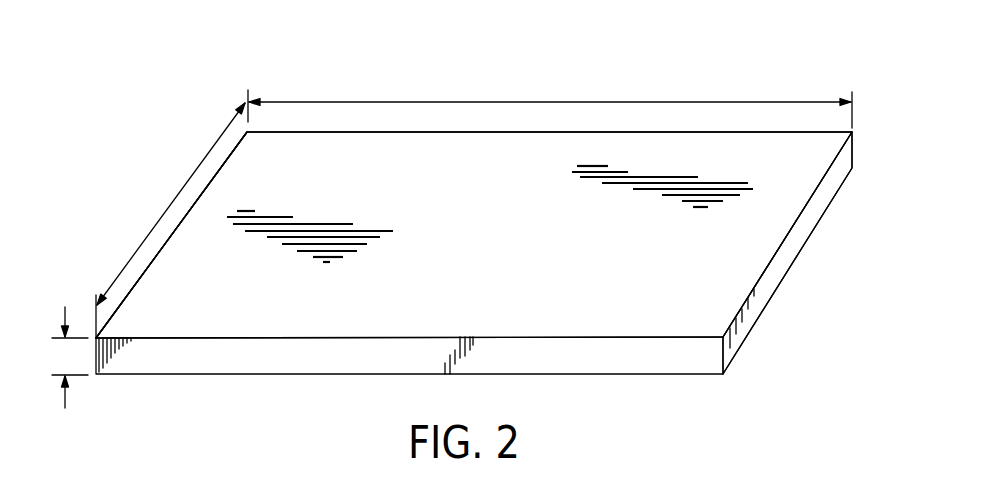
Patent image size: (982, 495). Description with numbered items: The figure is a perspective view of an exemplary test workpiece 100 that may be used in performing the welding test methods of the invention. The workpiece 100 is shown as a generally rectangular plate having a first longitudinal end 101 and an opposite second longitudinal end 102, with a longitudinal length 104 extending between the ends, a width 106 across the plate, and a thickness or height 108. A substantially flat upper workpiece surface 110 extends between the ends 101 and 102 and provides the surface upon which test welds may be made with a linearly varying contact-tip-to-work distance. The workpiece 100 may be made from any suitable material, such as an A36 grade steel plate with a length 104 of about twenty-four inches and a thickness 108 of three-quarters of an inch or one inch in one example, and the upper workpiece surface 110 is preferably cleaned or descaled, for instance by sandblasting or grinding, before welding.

The test workpiece 100 is at (742, 88).
The first longitudinal end 101 is at (167, 162).
The second longitudinal end 102 is at (770, 322).
The longitudinal length 104 is at (498, 100).
The width 106 is at (230, 128).
The thickness 108 is at (65, 395).
The upper workpiece surface 110 is at (758, 232).